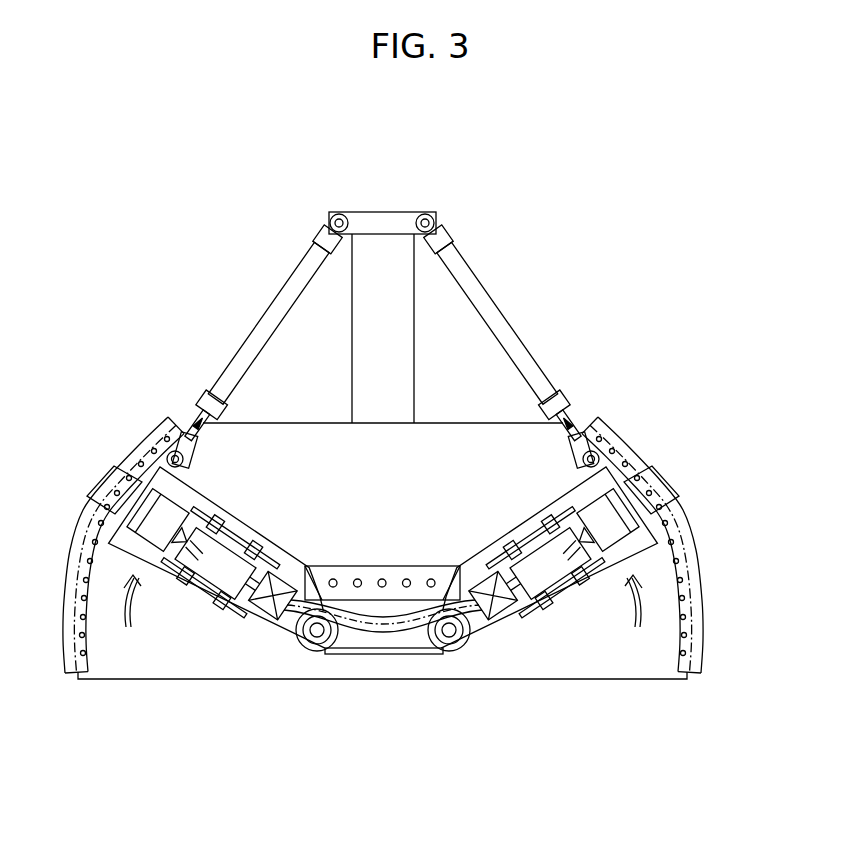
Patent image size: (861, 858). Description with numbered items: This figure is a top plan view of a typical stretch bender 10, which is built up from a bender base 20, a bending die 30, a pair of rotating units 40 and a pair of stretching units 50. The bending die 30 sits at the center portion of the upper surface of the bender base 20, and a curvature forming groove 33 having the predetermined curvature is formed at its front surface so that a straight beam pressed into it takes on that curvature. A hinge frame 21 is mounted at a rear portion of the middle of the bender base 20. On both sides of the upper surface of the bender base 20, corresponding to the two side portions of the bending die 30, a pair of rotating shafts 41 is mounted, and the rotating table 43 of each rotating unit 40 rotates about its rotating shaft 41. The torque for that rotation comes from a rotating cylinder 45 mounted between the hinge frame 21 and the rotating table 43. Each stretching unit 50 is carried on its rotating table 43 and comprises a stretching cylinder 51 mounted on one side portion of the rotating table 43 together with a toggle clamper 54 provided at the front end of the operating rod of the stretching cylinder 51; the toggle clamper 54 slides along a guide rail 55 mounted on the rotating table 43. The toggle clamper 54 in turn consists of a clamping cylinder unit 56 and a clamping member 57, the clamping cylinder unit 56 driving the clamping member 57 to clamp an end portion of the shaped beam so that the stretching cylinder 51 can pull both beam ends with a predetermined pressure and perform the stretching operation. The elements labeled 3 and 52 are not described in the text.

The frame plate 3 is at (410, 656).
The stretch bender 10 is at (284, 740).
The bender base 20 is at (243, 665).
The hinge frame 21 is at (381, 214).
The bending die 30 is at (384, 565).
The curvature forming groove 33 is at (384, 642).
The rotating unit 40 is at (221, 481).
The rotating shaft 41 is at (317, 653).
The rotating table 43 is at (140, 553).
The rotating cylinder 45 is at (278, 311).
The stretching unit 50 is at (248, 541).
The stretching cylinder 51 is at (614, 538).
The guide clamp block 52 is at (645, 540).
The toggle clamper 54 is at (492, 527).
The guide rail 55 is at (549, 604).
The clamping cylinder unit 56 is at (537, 550).
The clamping member 57 is at (505, 578).